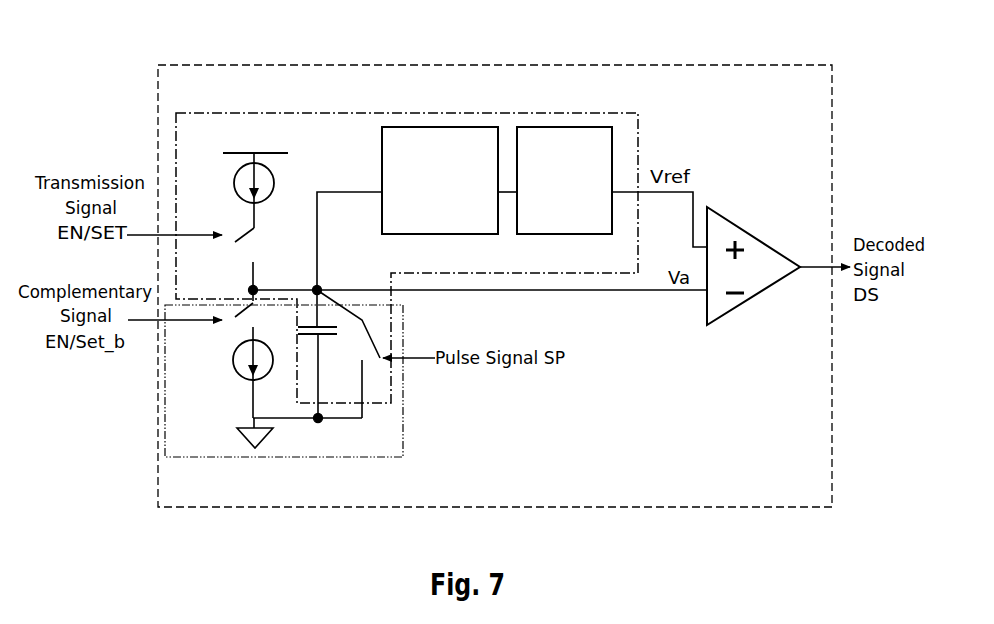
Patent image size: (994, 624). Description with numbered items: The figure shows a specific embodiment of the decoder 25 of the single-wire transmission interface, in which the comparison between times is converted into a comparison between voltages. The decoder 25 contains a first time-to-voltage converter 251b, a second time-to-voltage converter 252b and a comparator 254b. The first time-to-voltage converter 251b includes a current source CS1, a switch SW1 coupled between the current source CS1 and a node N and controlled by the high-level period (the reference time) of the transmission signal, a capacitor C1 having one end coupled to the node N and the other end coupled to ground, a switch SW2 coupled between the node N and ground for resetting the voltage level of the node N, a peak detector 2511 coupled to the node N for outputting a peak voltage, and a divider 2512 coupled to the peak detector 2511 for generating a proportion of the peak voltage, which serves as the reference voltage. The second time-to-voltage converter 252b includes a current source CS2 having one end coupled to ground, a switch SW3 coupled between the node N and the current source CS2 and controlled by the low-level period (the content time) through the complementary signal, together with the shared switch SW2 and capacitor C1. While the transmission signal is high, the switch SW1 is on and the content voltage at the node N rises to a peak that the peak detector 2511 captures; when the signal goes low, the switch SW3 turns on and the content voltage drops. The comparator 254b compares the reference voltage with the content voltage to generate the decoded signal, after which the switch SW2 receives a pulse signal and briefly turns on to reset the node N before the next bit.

The decoder 25 is at (806, 499).
The first time-to-voltage converter 251b is at (377, 113).
The second time-to-voltage converter 252b is at (404, 440).
The comparator 254b is at (728, 217).
The peak detector 2511 is at (418, 216).
The divider 2512 is at (545, 204).
The current source CS1 is at (236, 181).
The current source CS2 is at (236, 374).
The switch SW1 is at (247, 254).
The switch SW2 is at (383, 340).
The switch SW3 is at (246, 328).
The capacitor C1 is at (321, 354).
The node N is at (328, 276).